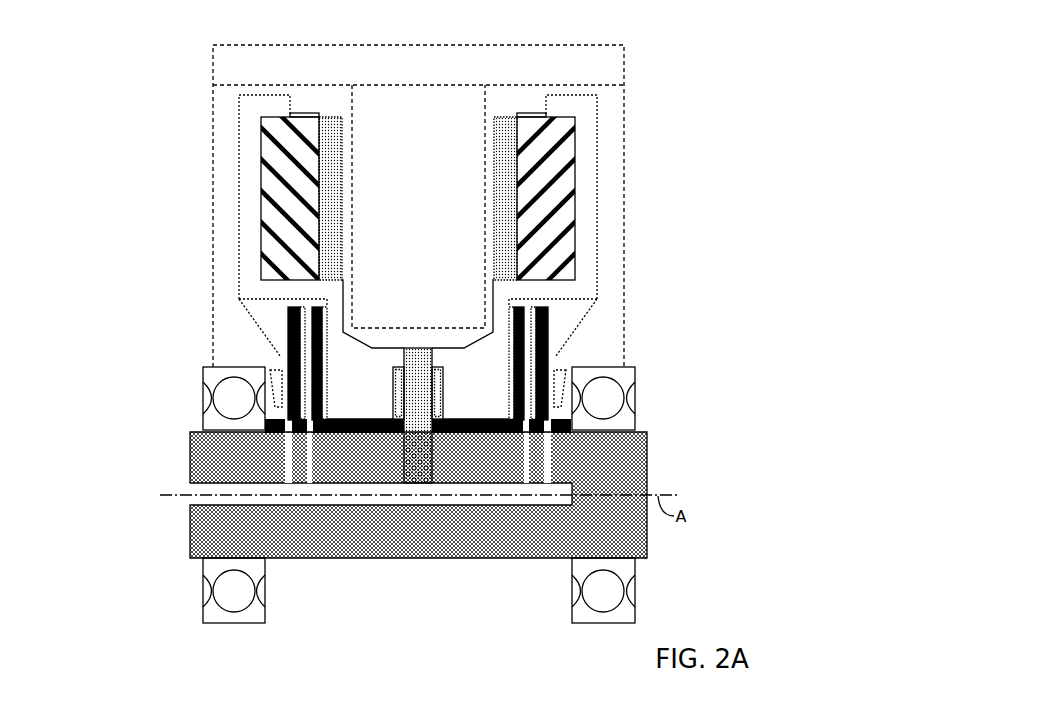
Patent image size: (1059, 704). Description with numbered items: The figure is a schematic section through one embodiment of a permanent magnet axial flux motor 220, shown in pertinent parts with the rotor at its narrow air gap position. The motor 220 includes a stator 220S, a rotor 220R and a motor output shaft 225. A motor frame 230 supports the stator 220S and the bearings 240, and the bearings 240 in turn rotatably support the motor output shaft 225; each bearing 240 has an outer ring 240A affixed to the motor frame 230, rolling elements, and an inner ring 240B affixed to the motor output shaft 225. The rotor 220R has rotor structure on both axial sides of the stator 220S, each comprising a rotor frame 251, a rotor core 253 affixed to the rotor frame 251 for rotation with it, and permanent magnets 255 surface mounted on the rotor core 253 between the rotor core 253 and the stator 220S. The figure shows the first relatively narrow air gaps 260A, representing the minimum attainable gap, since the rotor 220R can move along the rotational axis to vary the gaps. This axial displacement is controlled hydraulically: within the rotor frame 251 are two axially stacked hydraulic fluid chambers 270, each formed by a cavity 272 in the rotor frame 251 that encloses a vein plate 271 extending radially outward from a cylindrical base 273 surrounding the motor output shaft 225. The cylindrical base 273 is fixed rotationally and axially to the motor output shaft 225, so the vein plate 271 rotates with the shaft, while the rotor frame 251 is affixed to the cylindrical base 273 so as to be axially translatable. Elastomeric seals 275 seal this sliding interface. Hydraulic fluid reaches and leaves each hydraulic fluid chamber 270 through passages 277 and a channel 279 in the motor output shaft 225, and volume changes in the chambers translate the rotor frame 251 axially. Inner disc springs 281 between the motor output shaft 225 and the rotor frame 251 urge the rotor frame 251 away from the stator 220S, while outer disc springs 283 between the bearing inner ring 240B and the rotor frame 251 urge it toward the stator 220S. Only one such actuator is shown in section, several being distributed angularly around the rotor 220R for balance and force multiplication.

The PMAF motor 220 is at (168, 161).
The rotor 220R is at (648, 133).
The stator 220S is at (400, 217).
The motor frame 230 is at (405, 74).
The rotor core 253 is at (305, 113).
The permanent magnets 255 is at (328, 117).
The relatively narrow air gaps 260A is at (346, 128).
The hydraulic fluid chamber 270 is at (290, 342).
The vein plate 271 is at (313, 306).
The cavity 272 is at (308, 318).
The outer disc springs 283 is at (280, 418).
The rotor frame 251 is at (348, 389).
The motor output shaft 225 is at (640, 448).
The elastomeric seals 275 is at (335, 437).
The cylindrical base 273 is at (482, 437).
The passages 277 is at (290, 440).
The inner disc springs 281 is at (400, 397).
The bearings 240 is at (188, 408).
The outer ring 240A is at (203, 376).
The inner ring 240B is at (203, 418).
The channel 279 is at (197, 500).